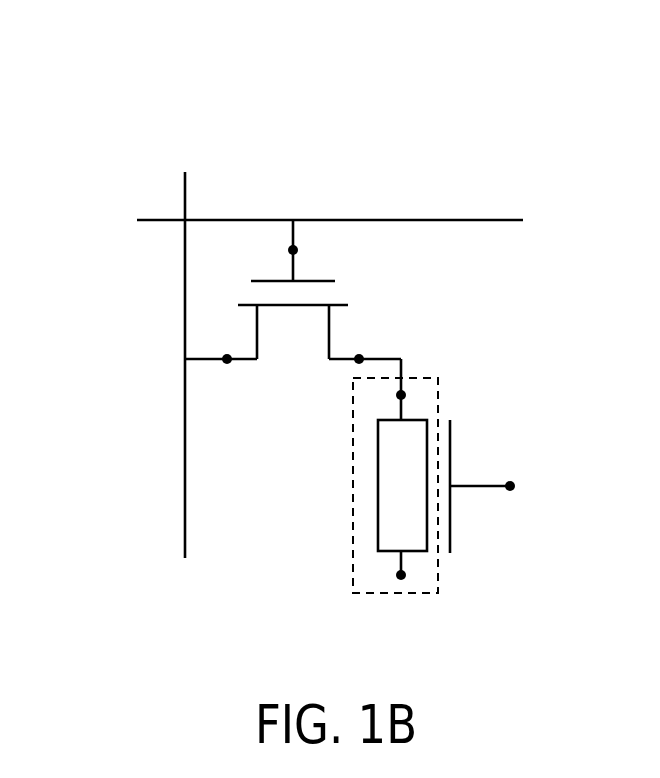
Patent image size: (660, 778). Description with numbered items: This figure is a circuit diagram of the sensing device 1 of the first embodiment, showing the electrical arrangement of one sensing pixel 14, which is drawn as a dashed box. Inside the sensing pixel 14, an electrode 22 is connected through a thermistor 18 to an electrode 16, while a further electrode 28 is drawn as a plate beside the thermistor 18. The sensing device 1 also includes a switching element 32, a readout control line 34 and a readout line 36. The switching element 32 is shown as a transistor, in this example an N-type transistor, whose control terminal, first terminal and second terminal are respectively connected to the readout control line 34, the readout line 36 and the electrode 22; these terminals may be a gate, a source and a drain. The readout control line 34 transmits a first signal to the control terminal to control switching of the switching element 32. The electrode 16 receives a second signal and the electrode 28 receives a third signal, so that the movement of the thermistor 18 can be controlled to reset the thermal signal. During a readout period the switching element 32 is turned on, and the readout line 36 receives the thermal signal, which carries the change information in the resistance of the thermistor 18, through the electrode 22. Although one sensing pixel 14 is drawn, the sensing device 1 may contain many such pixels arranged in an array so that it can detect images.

The sensing device 1 is at (552, 103).
The sensing pixel 14 is at (441, 390).
The electrode 16 is at (384, 571).
The thermistor 18 is at (378, 472).
The electrode 22 is at (384, 389).
The electrode 28 is at (499, 486).
The switching element 32 is at (333, 280).
The readout control line 34 is at (446, 220).
The readout line 36 is at (184, 422).